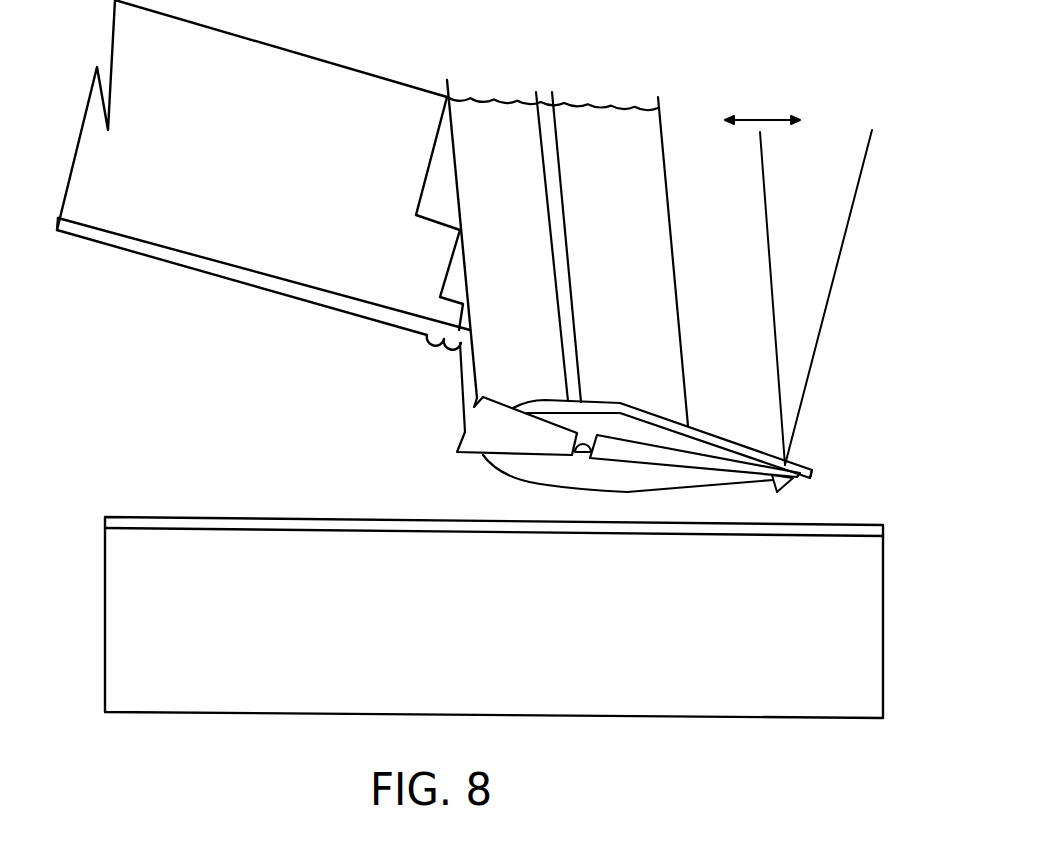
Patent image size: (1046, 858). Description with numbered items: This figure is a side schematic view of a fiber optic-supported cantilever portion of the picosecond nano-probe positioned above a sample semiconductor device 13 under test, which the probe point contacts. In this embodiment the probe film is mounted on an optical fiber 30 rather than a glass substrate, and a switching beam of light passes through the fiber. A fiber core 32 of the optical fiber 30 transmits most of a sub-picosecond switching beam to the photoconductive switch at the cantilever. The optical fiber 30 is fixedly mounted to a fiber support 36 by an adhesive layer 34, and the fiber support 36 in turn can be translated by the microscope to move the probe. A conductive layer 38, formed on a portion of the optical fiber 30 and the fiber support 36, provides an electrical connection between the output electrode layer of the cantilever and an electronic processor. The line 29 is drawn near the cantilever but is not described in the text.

The fiber support 36 is at (368, 70).
The conductive layer 38 is at (312, 302).
The adhesive layer 34 is at (438, 173).
The optical fiber 30 is at (667, 155).
The fiber core 32 is at (557, 143).
The reference axis line 29 is at (835, 280).
The semiconductor device 13 is at (645, 718).